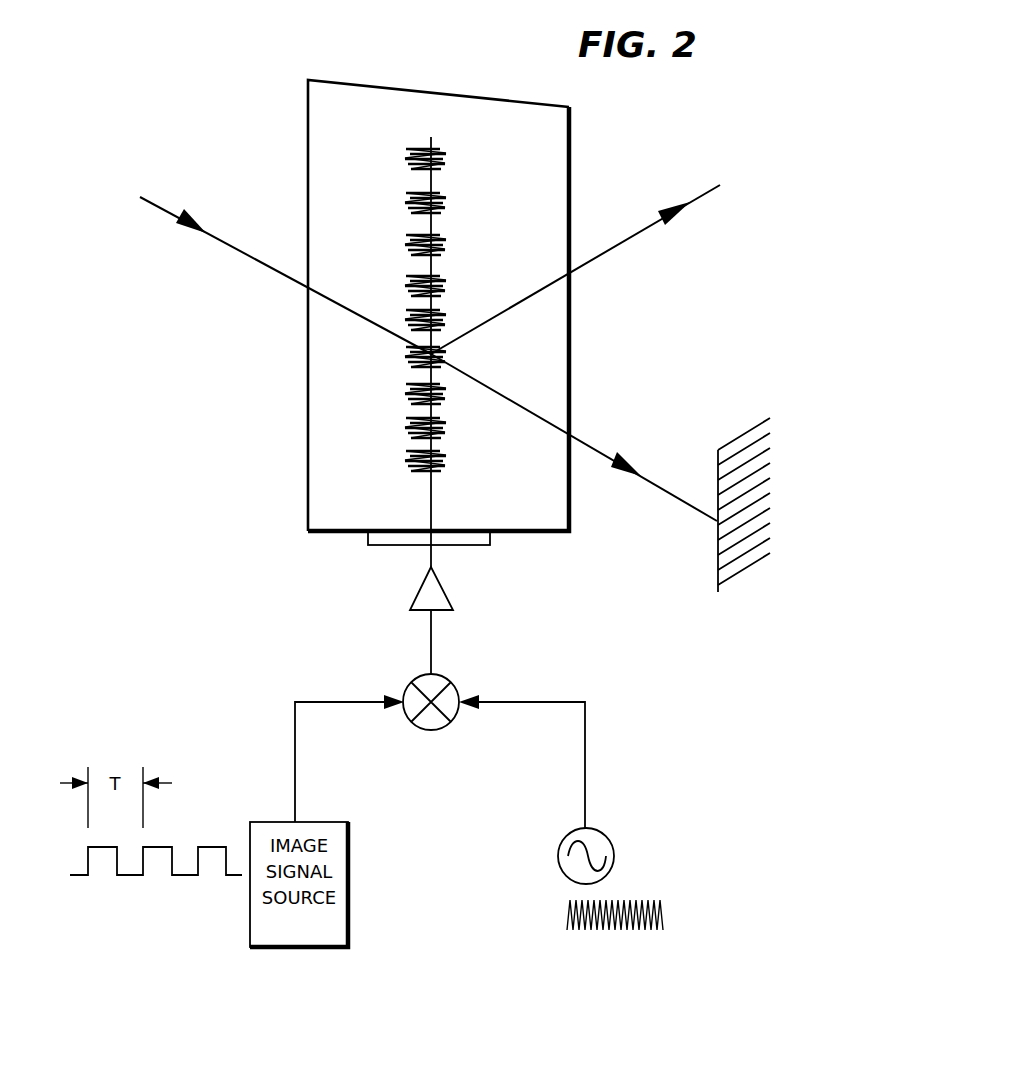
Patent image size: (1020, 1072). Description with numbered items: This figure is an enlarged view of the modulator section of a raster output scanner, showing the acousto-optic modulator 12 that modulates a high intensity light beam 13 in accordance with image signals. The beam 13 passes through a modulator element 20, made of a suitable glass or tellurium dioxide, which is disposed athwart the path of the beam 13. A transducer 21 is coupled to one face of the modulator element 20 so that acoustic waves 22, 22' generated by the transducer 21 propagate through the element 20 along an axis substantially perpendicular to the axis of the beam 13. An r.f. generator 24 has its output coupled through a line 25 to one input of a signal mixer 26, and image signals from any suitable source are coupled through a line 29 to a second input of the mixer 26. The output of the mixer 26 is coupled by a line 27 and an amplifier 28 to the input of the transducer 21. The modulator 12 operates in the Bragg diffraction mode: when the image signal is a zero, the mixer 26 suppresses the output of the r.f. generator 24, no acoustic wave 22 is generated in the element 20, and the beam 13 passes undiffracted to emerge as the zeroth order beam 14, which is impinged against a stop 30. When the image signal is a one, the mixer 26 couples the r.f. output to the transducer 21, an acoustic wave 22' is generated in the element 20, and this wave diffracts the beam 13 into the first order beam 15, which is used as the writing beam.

The modulator 12 is at (370, 55).
The beam 13 is at (284, 283).
The zeroth order beam 14 is at (596, 457).
The first order beam 15 is at (645, 229).
The modulator element 20 is at (571, 150).
The transducer 21 is at (493, 540).
The acoustic wave 22 is at (455, 352).
The acoustic wave 22' is at (455, 181).
The r.f. generator 24 is at (607, 836).
The line 25 is at (587, 745).
The signal mixer 26 is at (420, 724).
The line 27 is at (434, 645).
The amplifier 28 is at (449, 591).
The line 29 is at (294, 732).
The stop 30 is at (717, 544).